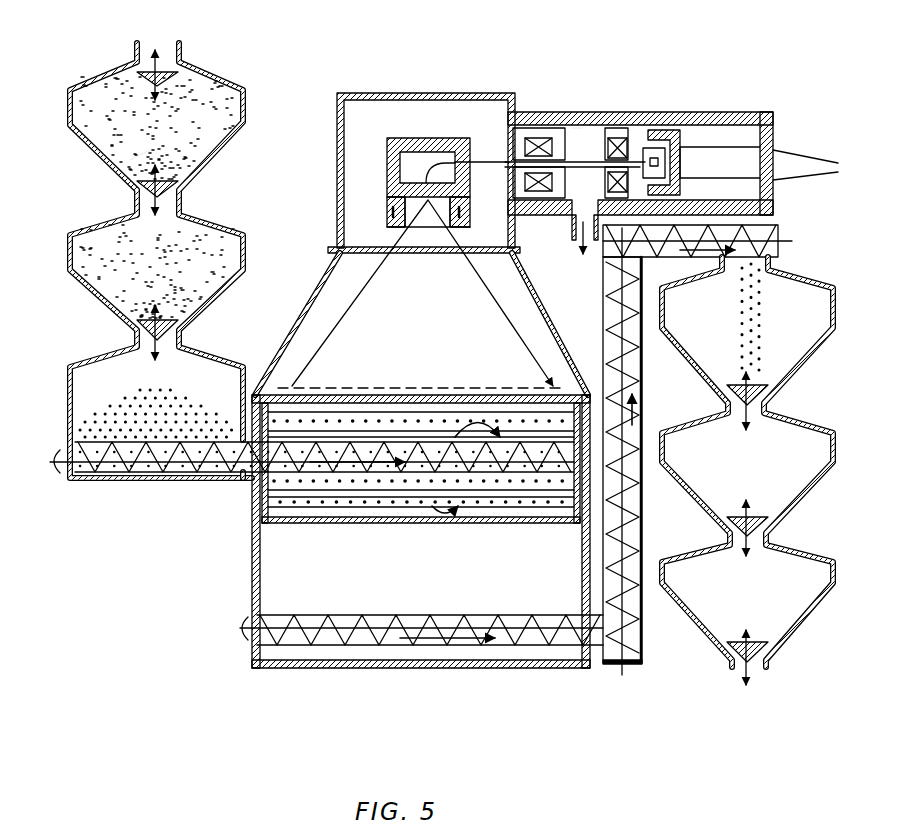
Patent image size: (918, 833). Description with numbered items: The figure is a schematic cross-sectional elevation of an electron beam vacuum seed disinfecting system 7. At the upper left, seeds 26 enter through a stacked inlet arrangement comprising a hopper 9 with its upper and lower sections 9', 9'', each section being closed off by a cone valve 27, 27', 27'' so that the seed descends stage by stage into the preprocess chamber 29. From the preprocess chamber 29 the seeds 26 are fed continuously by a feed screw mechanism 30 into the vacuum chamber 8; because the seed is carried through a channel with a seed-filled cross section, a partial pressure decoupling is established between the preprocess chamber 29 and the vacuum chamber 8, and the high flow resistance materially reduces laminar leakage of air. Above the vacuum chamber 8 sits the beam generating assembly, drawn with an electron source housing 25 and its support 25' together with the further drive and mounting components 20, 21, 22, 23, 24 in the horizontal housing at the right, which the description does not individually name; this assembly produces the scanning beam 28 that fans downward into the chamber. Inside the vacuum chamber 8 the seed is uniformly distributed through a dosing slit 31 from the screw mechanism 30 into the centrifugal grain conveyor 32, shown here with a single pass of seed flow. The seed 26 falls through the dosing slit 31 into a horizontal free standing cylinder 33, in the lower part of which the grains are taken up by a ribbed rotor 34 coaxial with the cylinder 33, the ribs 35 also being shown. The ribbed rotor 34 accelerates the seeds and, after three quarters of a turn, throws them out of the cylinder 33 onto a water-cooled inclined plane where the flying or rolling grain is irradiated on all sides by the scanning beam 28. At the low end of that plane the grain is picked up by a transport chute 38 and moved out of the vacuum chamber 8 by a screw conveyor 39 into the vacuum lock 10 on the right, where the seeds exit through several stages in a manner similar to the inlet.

The apparatus 7 is at (682, 132).
The vacuum chamber 8 is at (252, 597).
The feed hopper 9 is at (138, 260).
The upper hopper section 9' is at (140, 112).
The lower hopper section 9'' is at (127, 271).
The vacuum lock 10 is at (803, 374).
The motor 20 is at (700, 158).
The coupling 21 is at (658, 160).
The coupling bracket 22 is at (642, 160).
The bearing 23 is at (617, 145).
The bearing 24 is at (532, 140).
The heating element 25 is at (409, 173).
The heater support block 25' is at (383, 211).
The seeds 26 is at (128, 162).
The cone valve 27 is at (129, 58).
The cone valve 27' is at (113, 194).
The cone valve 27'' is at (104, 332).
The scanning beam 28 is at (368, 283).
The preprocess chamber 29 is at (95, 383).
The feed screw mechanism 30 is at (80, 445).
The dosing slit 31 is at (455, 503).
The centrifugal grain conveyor 32 is at (497, 505).
The horizontal free standing cylinder 33 is at (545, 523).
The ribbed rotor 34 is at (262, 510).
The ribs 35 is at (300, 515).
The transport chute 38 is at (398, 648).
The screw conveyor 39 is at (635, 370).